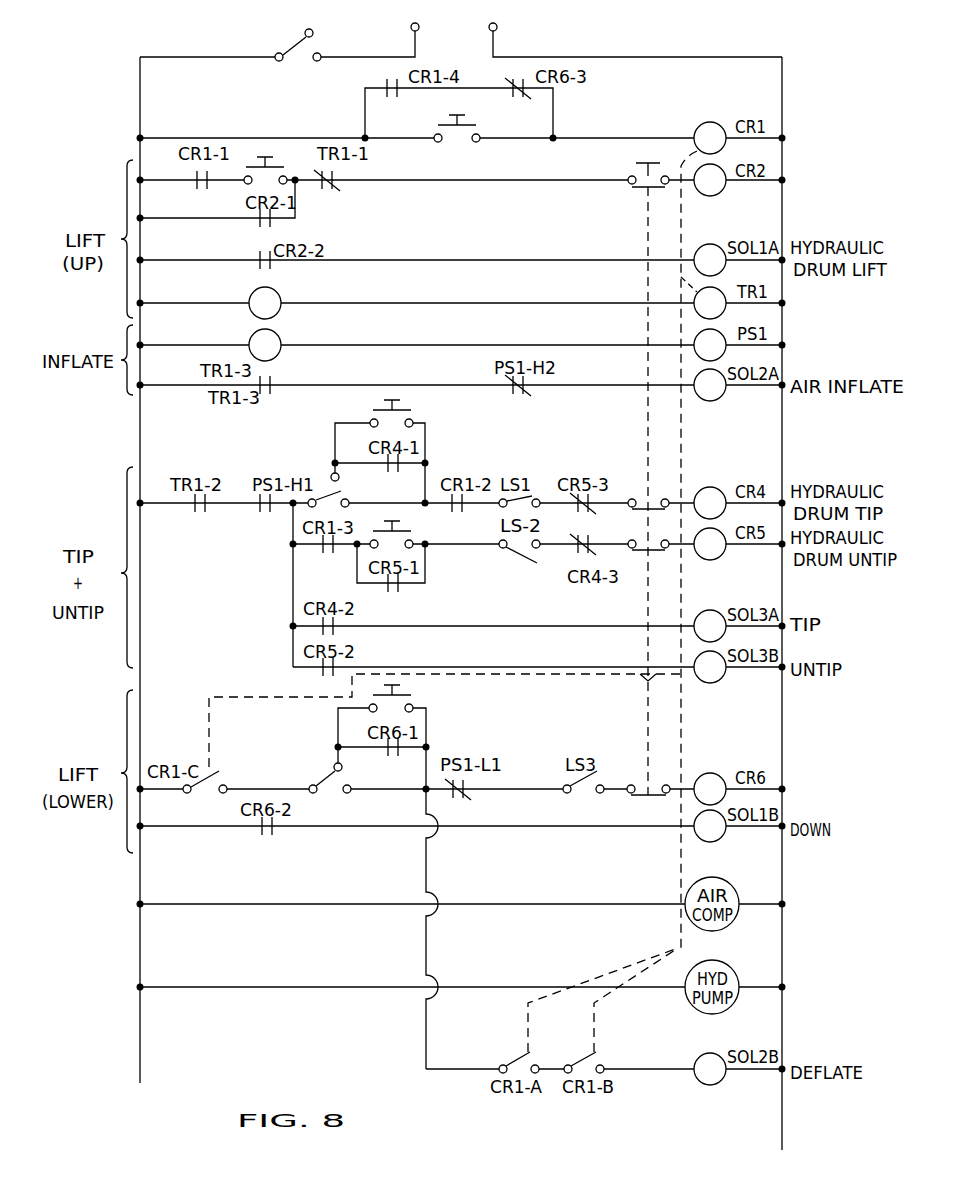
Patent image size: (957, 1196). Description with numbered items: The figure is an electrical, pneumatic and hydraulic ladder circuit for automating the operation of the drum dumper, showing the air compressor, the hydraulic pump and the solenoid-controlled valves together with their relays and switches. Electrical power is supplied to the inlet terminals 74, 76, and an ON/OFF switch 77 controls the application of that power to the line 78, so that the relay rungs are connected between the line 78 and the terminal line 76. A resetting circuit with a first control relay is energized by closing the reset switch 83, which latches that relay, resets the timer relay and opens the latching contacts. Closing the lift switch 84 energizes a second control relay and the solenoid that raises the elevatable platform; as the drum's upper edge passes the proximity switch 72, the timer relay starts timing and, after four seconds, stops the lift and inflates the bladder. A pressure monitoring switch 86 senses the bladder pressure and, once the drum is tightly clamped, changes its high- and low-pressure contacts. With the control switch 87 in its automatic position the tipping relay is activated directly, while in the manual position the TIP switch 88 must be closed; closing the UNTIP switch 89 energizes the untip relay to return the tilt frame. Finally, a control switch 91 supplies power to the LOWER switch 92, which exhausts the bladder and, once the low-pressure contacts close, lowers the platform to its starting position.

The proximity switch 72 is at (253, 292).
The inlet terminal 74 is at (419, 25).
The inlet terminal 76 is at (497, 25).
The ON/OFF switch 77 is at (292, 46).
The line 78 is at (140, 111).
The reset switch 83 is at (478, 131).
The lift switch 84 is at (290, 166).
The pressure monitoring switch 86 is at (251, 338).
The control switch 87 is at (323, 490).
The TIP switch 88 is at (413, 421).
The UNTIP switch 89 is at (413, 541).
The control switch 91 is at (328, 781).
The LOWER switch 92 is at (413, 706).